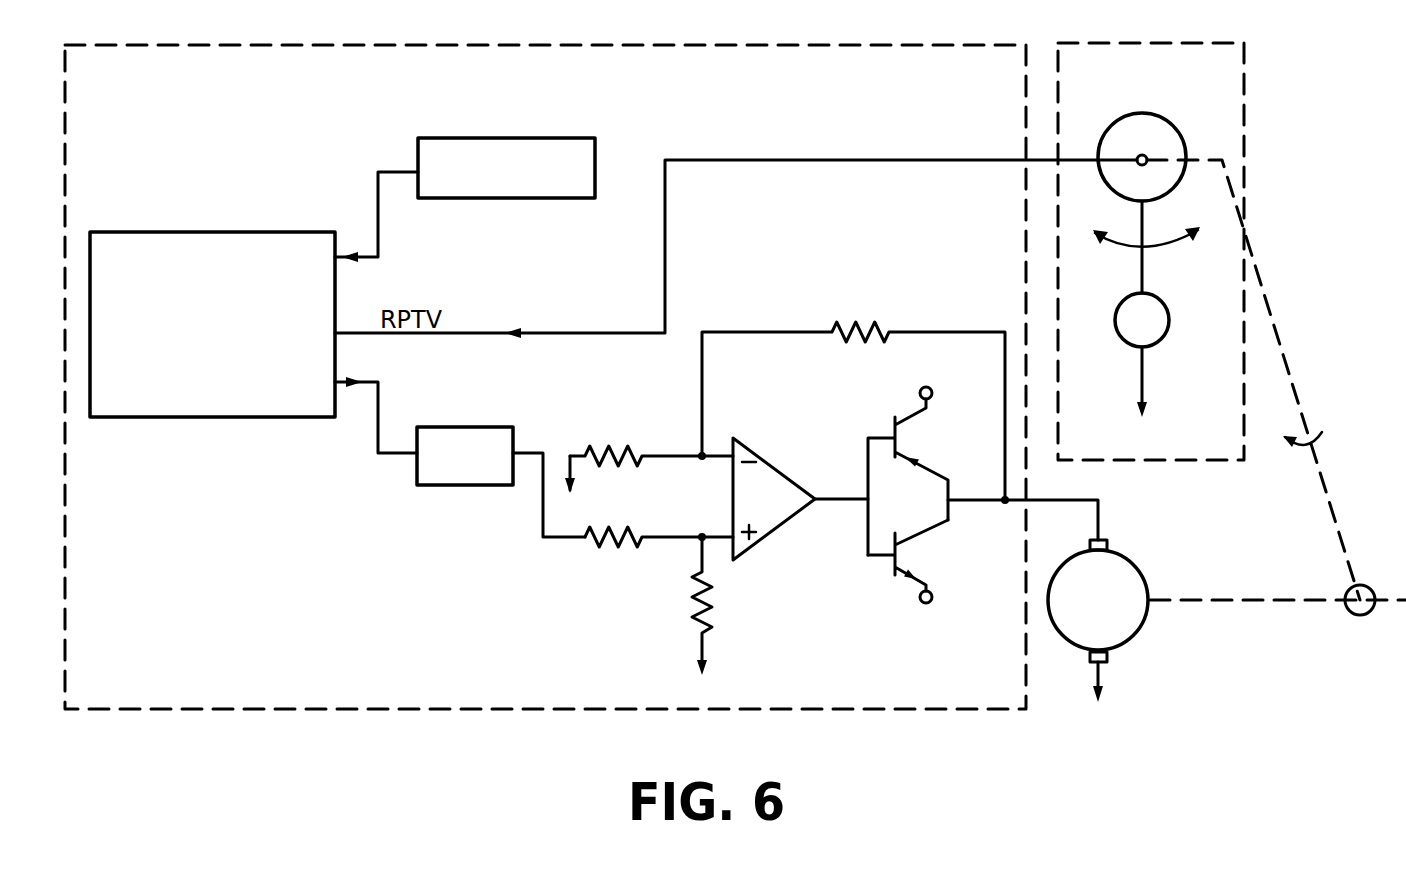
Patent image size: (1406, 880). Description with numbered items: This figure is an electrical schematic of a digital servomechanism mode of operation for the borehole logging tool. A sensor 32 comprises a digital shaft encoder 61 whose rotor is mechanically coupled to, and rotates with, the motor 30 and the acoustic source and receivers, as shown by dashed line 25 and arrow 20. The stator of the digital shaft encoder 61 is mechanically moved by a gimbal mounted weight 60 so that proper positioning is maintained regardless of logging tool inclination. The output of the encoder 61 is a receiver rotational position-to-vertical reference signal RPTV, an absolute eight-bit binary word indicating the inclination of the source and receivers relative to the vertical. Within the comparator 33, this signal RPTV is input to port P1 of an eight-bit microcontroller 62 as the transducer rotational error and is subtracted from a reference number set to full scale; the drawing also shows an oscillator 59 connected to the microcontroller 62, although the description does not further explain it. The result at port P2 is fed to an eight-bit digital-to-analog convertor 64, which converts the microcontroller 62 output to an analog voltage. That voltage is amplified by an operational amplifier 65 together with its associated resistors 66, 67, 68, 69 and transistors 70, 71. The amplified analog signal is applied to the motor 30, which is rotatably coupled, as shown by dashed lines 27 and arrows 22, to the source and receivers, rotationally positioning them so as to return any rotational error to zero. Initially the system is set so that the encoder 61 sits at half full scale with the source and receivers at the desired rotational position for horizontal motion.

The comparator 33 is at (642, 45).
The microcontroller 62 is at (205, 232).
The oscillator 59 is at (562, 138).
The digital-to-analog convertor 64 is at (497, 487).
The resistor 66 is at (640, 462).
The resistor 67 is at (600, 548).
The resistor 68 is at (695, 607).
The resistor 69 is at (860, 322).
The operational amplifier 65 is at (745, 555).
The transistor 70 is at (925, 433).
The transistor 71 is at (930, 565).
The motor 30 is at (1115, 553).
The dashed lines 27 is at (1185, 603).
The arrows 22 is at (1250, 618).
The dashed line 25 is at (1270, 308).
The arrow 20 is at (1318, 437).
The sensor 32 is at (1128, 42).
The digital shaft encoder 61 is at (1165, 190).
The gimbal mounted weight 60 is at (1170, 312).